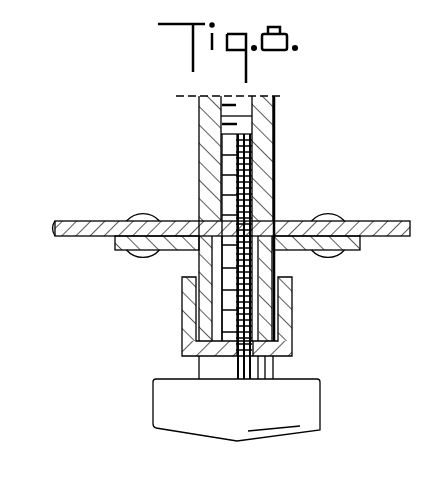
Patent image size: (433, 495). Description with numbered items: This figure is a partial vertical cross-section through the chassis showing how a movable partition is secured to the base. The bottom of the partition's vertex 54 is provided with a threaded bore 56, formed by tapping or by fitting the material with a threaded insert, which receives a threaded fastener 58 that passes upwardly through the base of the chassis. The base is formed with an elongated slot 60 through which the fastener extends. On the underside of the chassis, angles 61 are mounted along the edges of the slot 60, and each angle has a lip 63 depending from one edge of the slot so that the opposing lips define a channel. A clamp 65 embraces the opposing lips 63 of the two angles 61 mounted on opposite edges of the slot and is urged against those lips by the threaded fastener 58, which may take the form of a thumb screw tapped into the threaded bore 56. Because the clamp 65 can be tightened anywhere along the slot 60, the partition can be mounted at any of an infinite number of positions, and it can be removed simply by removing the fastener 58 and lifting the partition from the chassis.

The vertex 54 is at (200, 141).
The threaded bore 56 is at (248, 120).
The threaded fastener 58 is at (264, 152).
The elongated slot 60 is at (262, 208).
The angle 61 is at (199, 258).
The lip 63 is at (182, 336).
The clamp 65 is at (188, 317).